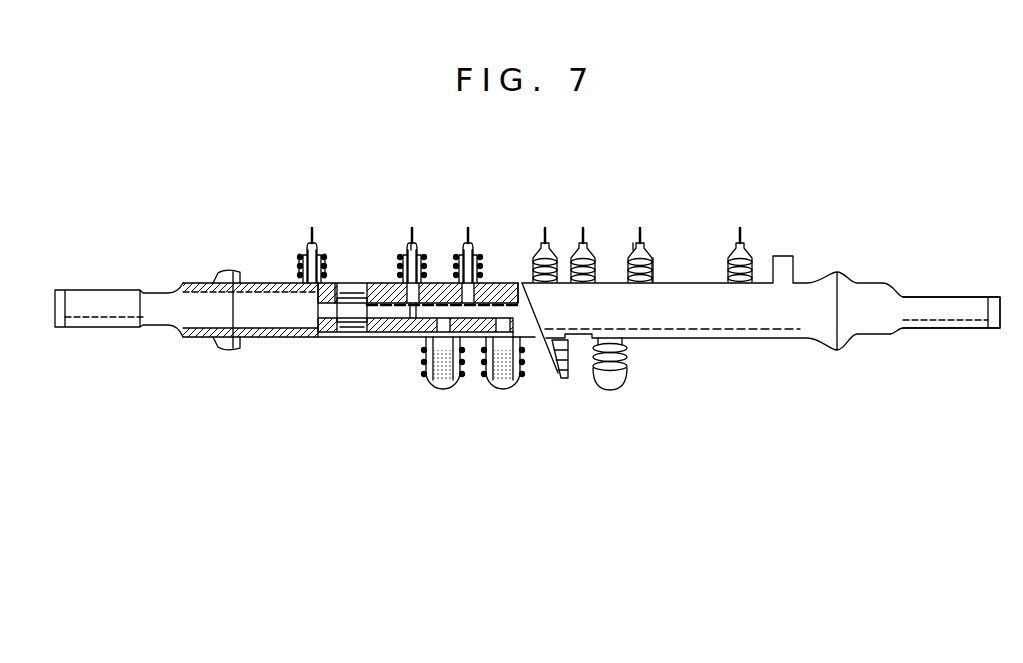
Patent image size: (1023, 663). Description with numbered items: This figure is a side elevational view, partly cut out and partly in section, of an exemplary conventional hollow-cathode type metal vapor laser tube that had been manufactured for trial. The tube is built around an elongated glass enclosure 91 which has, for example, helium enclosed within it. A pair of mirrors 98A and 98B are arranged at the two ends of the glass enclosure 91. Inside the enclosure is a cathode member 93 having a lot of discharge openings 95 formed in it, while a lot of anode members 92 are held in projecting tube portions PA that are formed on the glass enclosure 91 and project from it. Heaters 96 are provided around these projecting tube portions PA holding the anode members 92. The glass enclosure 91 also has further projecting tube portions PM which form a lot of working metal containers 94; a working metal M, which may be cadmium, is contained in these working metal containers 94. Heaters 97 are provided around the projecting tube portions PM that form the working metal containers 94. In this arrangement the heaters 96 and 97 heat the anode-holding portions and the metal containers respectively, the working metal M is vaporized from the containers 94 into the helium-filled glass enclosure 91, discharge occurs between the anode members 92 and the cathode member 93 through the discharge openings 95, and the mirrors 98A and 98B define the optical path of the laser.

The mirror 98A is at (63, 290).
The mirror 98B is at (995, 295).
The glass enclosure 91 is at (352, 298).
The anode members 92 is at (311, 232).
The cathode member 93 is at (505, 295).
The working metal containers 94 is at (424, 365).
The discharge openings 95 is at (445, 286).
The heaters 96 is at (298, 268).
The heaters 97 is at (522, 372).
The projecting tube portions PA is at (400, 262).
The projecting tube portions PM is at (433, 386).
The working metal M is at (498, 380).